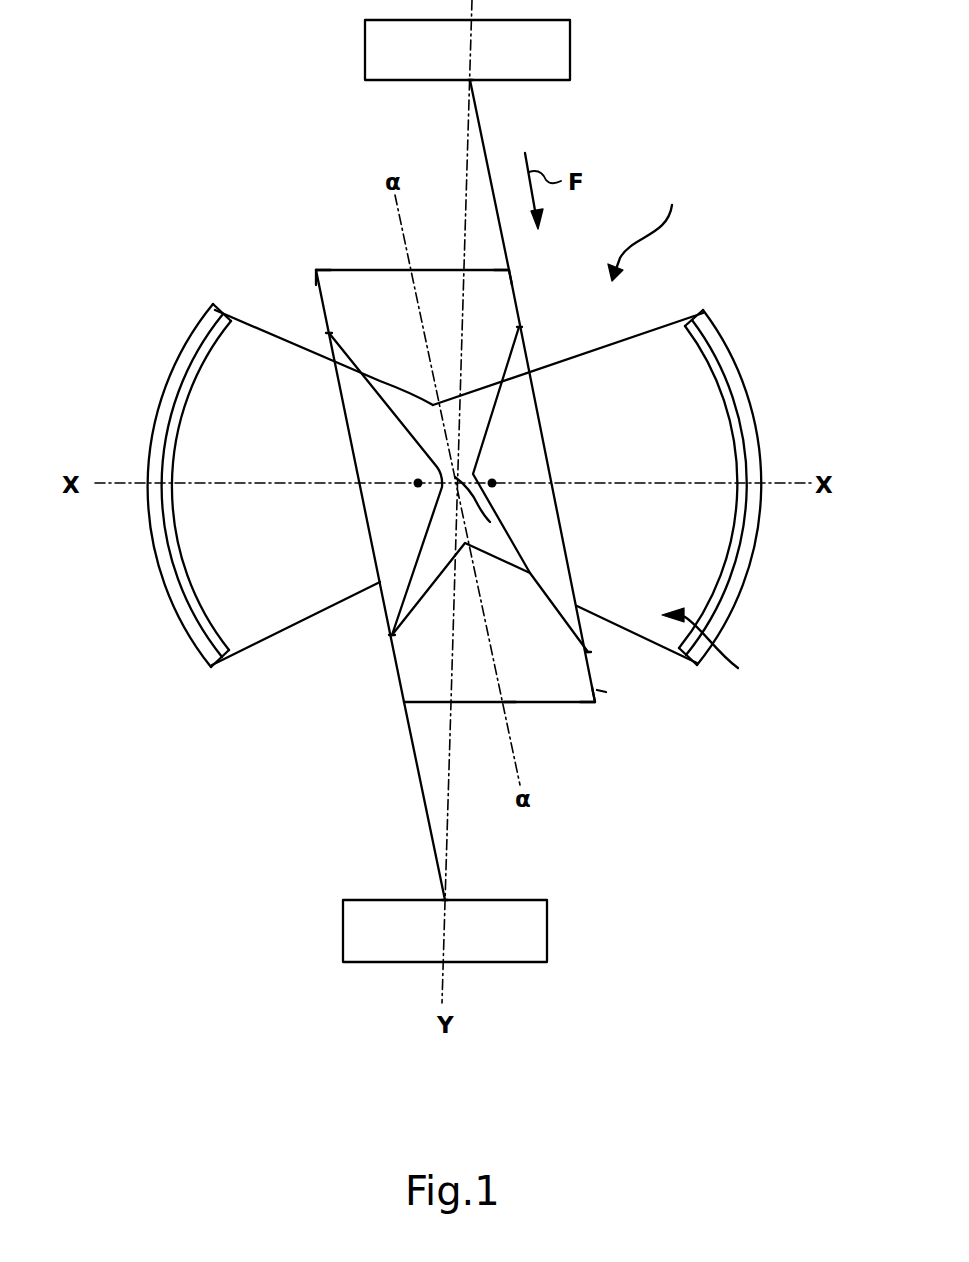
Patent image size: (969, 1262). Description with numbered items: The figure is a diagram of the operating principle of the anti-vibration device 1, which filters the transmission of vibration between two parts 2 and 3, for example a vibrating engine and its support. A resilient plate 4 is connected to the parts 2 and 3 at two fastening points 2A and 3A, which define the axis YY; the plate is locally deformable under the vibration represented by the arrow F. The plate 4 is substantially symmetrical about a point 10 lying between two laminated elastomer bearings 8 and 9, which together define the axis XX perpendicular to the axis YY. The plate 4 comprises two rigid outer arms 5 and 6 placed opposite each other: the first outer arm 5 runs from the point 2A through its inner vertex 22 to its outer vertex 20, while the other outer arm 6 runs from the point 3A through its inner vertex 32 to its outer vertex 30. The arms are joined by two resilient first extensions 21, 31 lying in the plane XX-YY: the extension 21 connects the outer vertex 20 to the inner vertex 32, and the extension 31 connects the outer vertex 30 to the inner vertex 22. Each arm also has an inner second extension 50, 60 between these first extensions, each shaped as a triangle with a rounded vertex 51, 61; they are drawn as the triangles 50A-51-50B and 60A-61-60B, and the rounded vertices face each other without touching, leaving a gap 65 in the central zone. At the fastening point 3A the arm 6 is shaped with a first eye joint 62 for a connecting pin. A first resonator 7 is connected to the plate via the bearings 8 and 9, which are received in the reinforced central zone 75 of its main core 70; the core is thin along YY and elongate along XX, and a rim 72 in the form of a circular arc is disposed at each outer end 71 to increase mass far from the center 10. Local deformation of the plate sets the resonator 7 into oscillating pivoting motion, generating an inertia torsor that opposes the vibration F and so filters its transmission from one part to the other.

The anti-vibration device 1 is at (644, 230).
The part 2 is at (556, 44).
The fastening point 2A is at (468, 82).
The part 3 is at (548, 915).
The fastening point 3A is at (444, 899).
The resilient plate 4 is at (604, 690).
The first outer arm 5 is at (503, 231).
The other outer arm 6 is at (421, 786).
The first resonator 7 is at (710, 649).
The laminated elastomer bearing 8 is at (418, 487).
The laminated elastomer bearing 9 is at (497, 484).
The center point 10 is at (489, 521).
The outer vertex of first outer arm 20 is at (598, 704).
The resilient first extension 21 is at (510, 706).
The inner vertex of first outer arm 22 is at (509, 268).
The outer vertex of other outer arm 30 is at (316, 268).
The resilient first extension 31 is at (351, 268).
The inner vertex of other outer arm 32 is at (403, 703).
The inner second extension 50 is at (550, 576).
The vertex of inner second extension 50A is at (521, 326).
The vertex of inner second extension 50B is at (591, 653).
The rounded vertex 51 is at (484, 470).
The inner second extension 60 is at (380, 510).
The vertex of inner second extension 60A is at (392, 636).
The vertex of inner second extension 60B is at (329, 334).
The rounded vertex 61 is at (436, 467).
The first eye joint 62 is at (191, 349).
The gap 65 is at (511, 606).
The main core 70 is at (666, 347).
The outer end 71 is at (236, 660).
The rim 72 is at (722, 357).
The reinforced central zone 75 is at (408, 403).